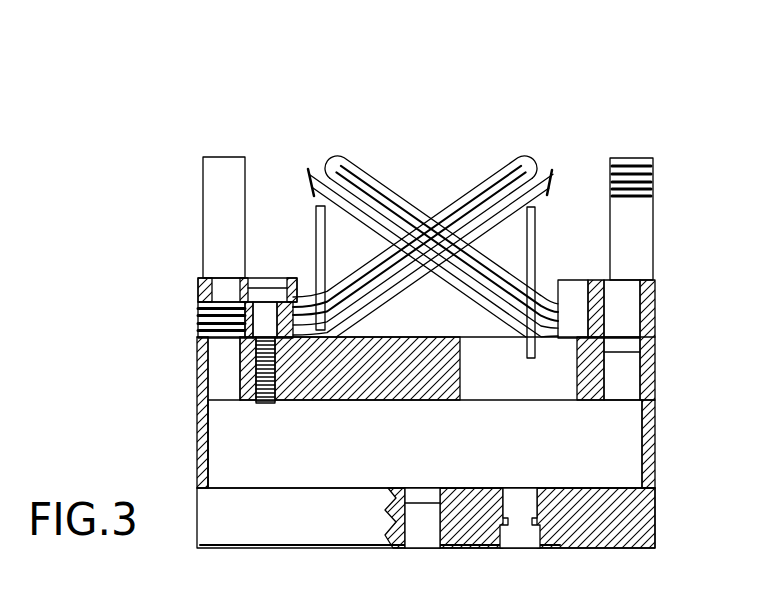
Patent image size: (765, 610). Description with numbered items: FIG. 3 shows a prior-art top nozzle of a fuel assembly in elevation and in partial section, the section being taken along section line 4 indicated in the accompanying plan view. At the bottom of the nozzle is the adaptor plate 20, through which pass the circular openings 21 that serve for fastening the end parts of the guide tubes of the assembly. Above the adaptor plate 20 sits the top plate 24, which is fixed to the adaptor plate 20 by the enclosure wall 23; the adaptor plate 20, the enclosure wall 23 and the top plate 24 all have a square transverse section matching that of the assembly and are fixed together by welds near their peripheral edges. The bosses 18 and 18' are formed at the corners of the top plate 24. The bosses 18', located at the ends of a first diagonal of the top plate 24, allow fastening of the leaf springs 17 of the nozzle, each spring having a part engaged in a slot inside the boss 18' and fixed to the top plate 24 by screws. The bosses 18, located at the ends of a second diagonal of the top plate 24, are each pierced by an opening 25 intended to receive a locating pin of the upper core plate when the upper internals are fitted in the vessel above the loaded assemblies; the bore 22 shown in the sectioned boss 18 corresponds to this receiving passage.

The section line / viewing direction 4 is at (344, 136).
The leaf springs 17 is at (326, 163).
The bosses 18' is at (214, 292).
The bosses 18 is at (635, 340).
The opening 25 is at (620, 329).
The top plate 24 is at (654, 369).
The enclosure wall 23 is at (200, 449).
The adaptor plate 20 is at (654, 525).
The bore 22 is at (423, 528).
The circular openings 21 is at (517, 525).